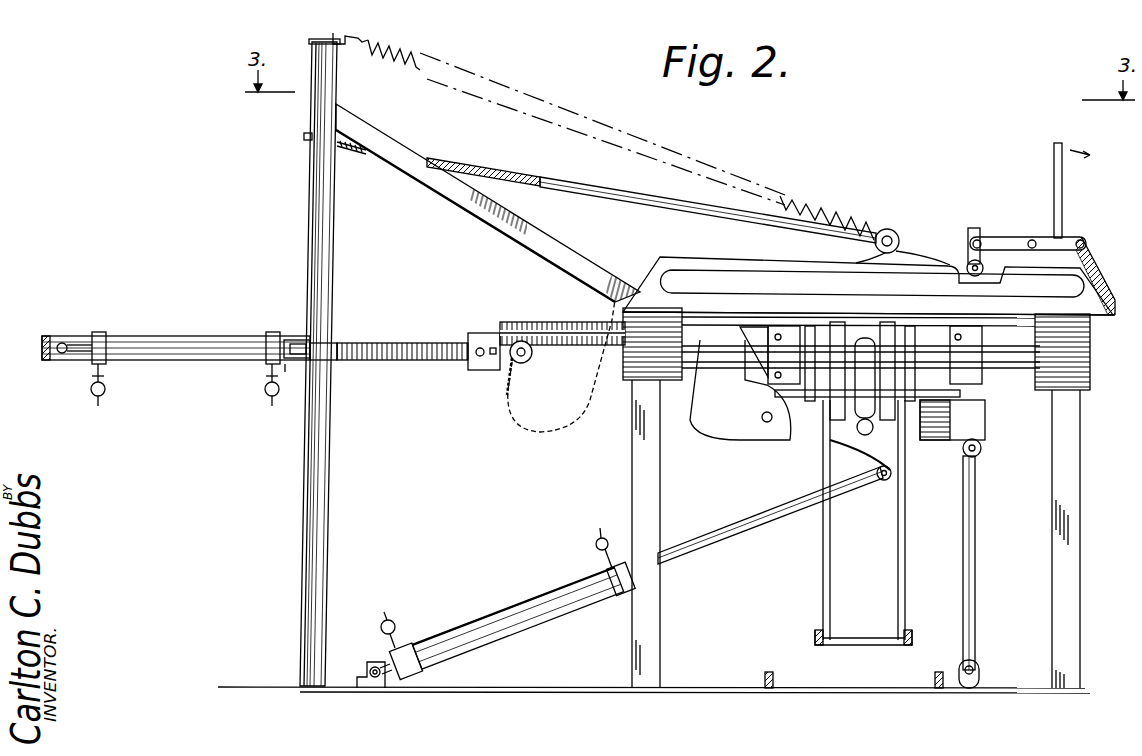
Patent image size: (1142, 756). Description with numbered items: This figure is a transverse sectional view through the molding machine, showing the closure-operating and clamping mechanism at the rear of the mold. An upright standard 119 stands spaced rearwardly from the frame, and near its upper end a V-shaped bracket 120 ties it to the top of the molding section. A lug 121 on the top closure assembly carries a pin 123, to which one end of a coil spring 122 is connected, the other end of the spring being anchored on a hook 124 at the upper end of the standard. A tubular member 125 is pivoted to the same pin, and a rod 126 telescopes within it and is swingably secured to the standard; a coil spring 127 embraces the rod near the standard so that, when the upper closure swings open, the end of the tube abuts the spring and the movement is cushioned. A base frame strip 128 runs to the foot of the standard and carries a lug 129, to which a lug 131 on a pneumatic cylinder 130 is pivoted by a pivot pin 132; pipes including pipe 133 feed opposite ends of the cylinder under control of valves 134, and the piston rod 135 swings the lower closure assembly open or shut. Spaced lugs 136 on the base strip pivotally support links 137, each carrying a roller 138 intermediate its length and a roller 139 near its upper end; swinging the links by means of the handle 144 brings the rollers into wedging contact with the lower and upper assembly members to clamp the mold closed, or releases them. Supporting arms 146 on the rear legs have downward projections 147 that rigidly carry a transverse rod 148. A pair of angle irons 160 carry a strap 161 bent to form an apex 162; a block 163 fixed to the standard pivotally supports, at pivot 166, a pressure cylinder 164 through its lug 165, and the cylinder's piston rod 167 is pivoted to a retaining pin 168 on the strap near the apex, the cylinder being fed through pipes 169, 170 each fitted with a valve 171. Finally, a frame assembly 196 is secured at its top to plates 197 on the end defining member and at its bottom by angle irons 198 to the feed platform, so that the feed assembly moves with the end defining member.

The standard 119 is at (328, 448).
The V-shaped bracket 120 is at (458, 203).
The lug 121 is at (930, 250).
The coil spring 122 is at (805, 198).
The pin 123 is at (893, 230).
The hook 124 is at (365, 30).
The tubular member 125 is at (596, 184).
The rod 126 is at (500, 172).
The coil spring 127 is at (352, 150).
The base frame strip 128 is at (545, 690).
The lug 129 is at (365, 665).
The pneumatic cylinder 130 is at (493, 610).
The lug 131 is at (380, 645).
The pivot pin 132 is at (373, 680).
The pipe 133 is at (412, 645).
The valves 134 is at (595, 545).
The piston rod 135 is at (730, 530).
The lugs 136 is at (980, 668).
The links 137 is at (976, 535).
The roller 138 is at (981, 452).
The roller 139 is at (973, 237).
The handle 144 is at (1062, 178).
The supporting arms 146 is at (512, 345).
The projection 147 is at (530, 370).
The rod 148 is at (525, 335).
The angle irons 160 is at (470, 335).
The strap 161 is at (375, 340).
The apex 162 is at (44, 335).
The block 163 is at (298, 340).
The pressure cylinder 164 is at (168, 335).
The lug 165 is at (284, 370).
The pivot 166 is at (268, 330).
The piston rod 167 is at (100, 332).
The retaining pin 168 is at (65, 340).
The pipe 169 is at (95, 378).
The pipe 170 is at (268, 378).
The valve 171 is at (105, 392).
The frame assembly 196 is at (905, 540).
The plates 197 is at (895, 320).
The angle irons 198 is at (910, 648).